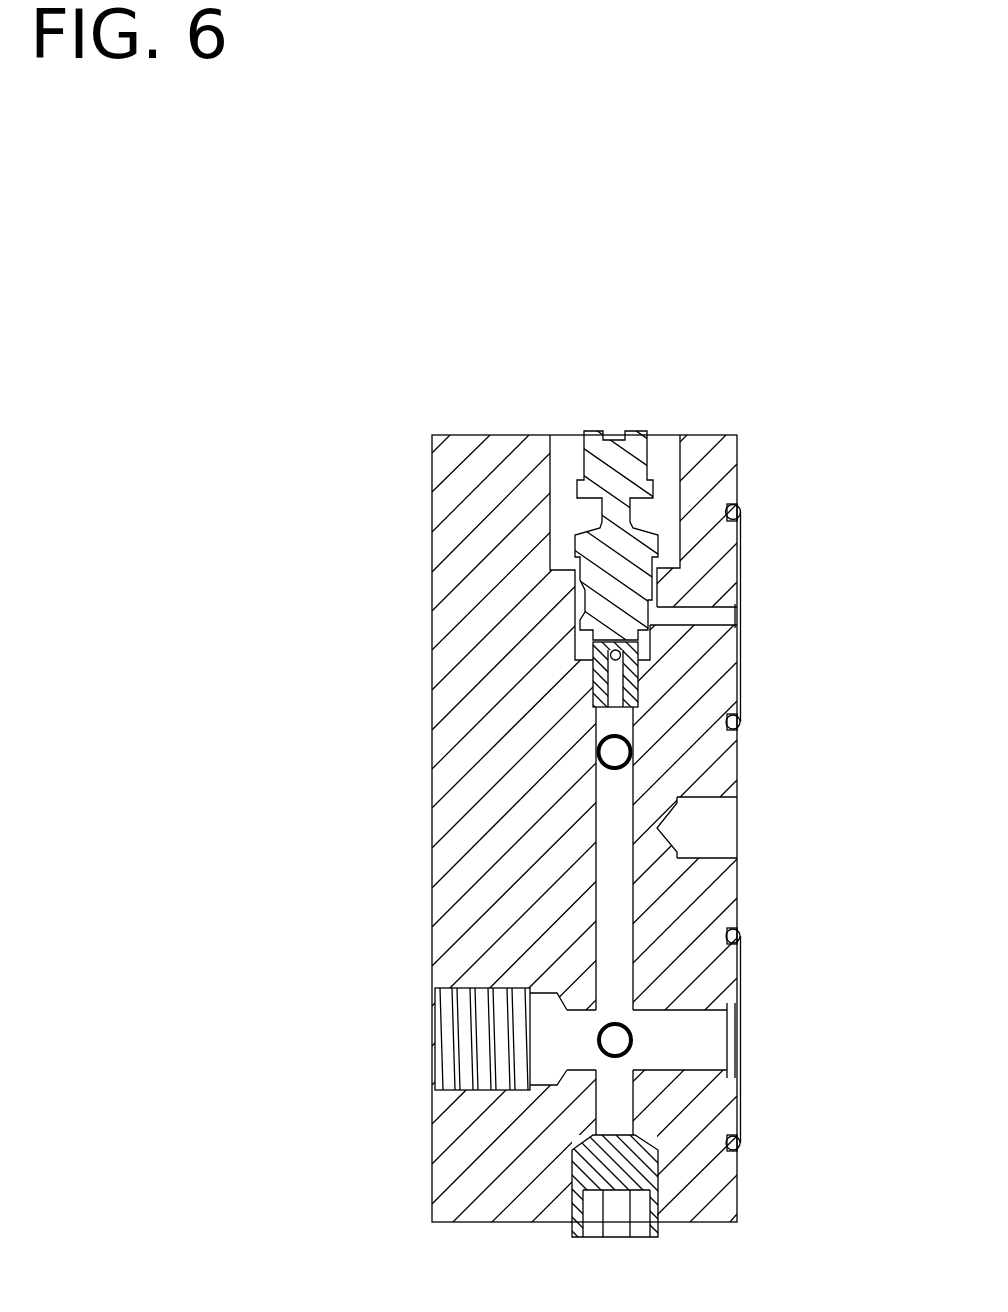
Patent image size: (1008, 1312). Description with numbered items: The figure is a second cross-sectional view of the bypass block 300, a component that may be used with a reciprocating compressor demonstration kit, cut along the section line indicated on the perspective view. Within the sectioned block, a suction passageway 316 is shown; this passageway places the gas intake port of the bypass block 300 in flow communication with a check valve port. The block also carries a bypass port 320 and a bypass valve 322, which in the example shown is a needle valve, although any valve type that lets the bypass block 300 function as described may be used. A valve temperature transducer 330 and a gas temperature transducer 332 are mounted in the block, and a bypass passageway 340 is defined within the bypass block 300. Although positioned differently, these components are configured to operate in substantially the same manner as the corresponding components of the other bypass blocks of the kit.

The bypass block 300 is at (740, 538).
The suction passageway 316 is at (431, 1039).
The bypass port 320 is at (742, 614).
The bypass valve 322 is at (635, 430).
The valve temperature transducer 330 is at (632, 758).
The gas temperature transducer 332 is at (630, 1026).
The bypass passageway 340 is at (623, 892).